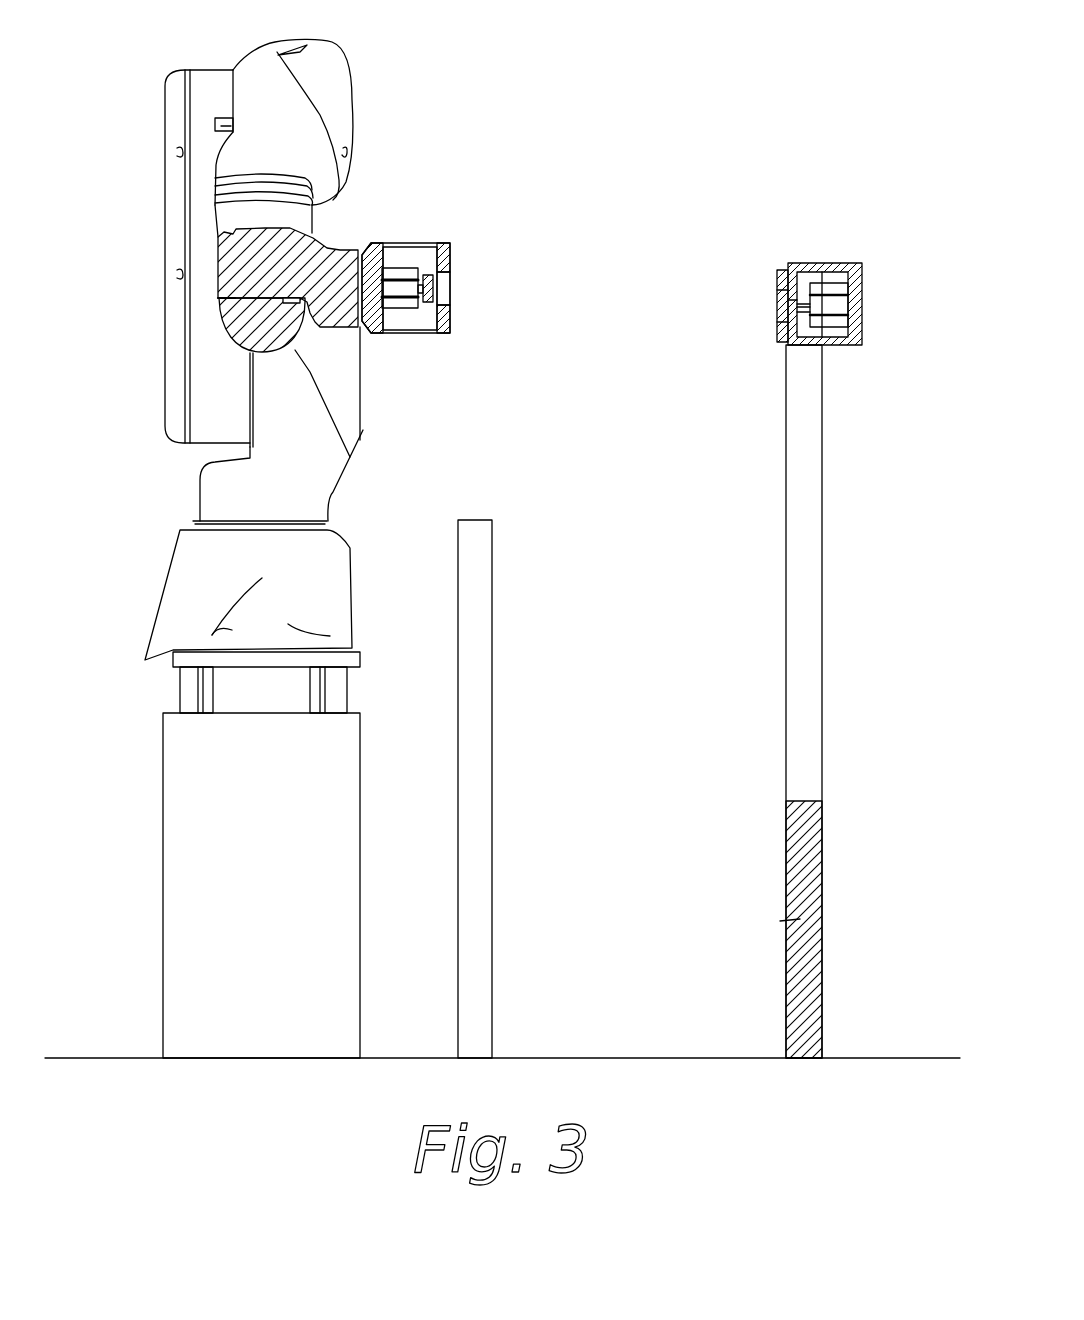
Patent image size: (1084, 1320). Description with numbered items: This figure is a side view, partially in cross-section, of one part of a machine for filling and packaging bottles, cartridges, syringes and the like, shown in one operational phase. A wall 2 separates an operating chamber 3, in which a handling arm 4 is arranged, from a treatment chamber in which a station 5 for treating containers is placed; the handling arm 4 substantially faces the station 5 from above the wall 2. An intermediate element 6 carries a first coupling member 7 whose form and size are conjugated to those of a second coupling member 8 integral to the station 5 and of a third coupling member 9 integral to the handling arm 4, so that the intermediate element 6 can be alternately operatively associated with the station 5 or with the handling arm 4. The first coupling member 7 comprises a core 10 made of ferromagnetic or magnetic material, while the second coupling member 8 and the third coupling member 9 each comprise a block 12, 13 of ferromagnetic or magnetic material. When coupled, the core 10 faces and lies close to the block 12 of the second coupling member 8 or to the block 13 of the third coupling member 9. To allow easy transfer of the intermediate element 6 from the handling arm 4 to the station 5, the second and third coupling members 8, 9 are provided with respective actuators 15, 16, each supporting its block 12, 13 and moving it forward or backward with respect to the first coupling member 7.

The wall 2 is at (478, 1007).
The operating chamber 3 is at (264, 280).
The handling arm 4 is at (213, 494).
The station 5 is at (875, 266).
The intermediate element 6 is at (449, 243).
The first coupling member 7 is at (772, 323).
The second coupling member 8 is at (803, 292).
The third coupling member 9 is at (432, 333).
The core 10 is at (777, 300).
The block 12 is at (795, 318).
The block 13 is at (450, 292).
The actuator 15 is at (830, 305).
The actuator 16 is at (398, 290).